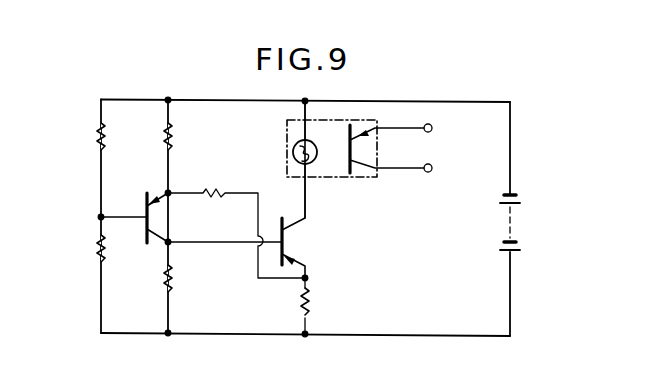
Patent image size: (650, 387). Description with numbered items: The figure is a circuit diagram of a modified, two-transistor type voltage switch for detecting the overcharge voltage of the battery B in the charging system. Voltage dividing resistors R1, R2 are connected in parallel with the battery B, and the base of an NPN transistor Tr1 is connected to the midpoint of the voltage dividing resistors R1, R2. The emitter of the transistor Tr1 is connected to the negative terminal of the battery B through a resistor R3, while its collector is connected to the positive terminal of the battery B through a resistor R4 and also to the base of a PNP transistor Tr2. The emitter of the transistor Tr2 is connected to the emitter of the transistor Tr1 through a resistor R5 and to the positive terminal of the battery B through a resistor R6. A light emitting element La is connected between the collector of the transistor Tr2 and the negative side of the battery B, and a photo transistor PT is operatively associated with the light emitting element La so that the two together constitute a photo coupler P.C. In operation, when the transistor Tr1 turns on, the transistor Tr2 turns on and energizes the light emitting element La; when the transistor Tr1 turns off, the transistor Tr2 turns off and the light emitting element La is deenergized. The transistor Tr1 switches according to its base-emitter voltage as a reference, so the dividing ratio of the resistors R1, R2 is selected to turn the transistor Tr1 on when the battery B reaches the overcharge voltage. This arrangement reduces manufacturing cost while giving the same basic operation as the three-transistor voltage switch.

The voltage dividing resistor R1 is at (104, 141).
The voltage dividing resistor R2 is at (104, 252).
The resistor R3 is at (172, 141).
The resistor R4 is at (172, 275).
The resistor R5 is at (228, 190).
The resistor R6 is at (308, 305).
The NPN transistor Tr1 is at (150, 218).
The PNP transistor Tr2 is at (285, 241).
The light emitting element La is at (316, 149).
The photo transistor PT is at (355, 150).
The photo coupler P.C is at (327, 178).
The battery B is at (518, 219).